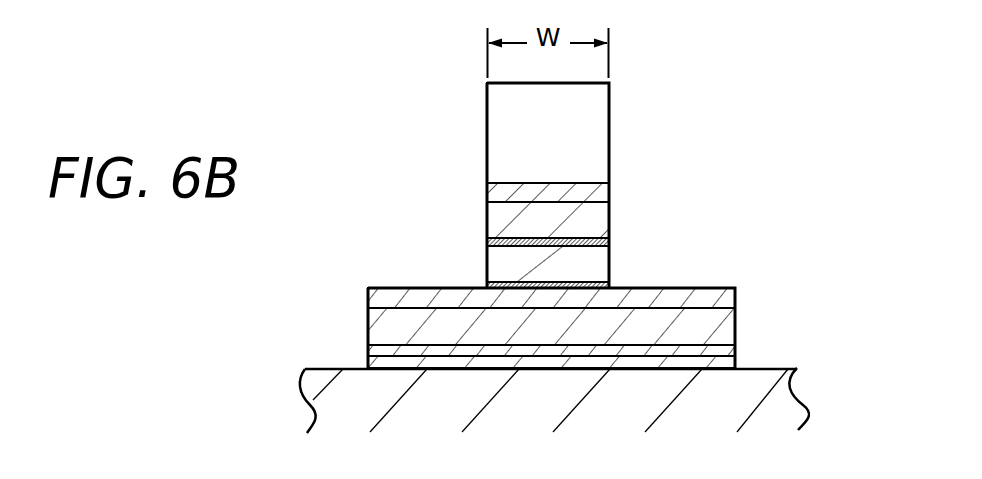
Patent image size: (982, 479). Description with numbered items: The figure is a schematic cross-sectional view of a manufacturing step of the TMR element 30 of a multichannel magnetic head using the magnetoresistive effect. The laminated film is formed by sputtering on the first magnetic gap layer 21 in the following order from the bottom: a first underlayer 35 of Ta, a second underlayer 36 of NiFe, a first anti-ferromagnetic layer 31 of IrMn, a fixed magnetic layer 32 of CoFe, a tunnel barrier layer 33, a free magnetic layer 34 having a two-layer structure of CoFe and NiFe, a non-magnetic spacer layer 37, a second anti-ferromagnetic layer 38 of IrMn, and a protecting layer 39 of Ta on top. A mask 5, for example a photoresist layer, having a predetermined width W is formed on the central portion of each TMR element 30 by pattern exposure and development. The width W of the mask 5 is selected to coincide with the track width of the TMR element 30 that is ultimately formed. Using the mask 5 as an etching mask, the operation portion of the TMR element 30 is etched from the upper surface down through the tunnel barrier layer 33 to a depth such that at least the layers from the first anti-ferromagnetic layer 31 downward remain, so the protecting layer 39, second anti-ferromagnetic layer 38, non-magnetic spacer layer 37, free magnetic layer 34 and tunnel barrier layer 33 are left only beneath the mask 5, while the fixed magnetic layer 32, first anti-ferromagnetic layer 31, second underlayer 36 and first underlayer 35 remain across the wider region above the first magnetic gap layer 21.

The mask 5 is at (592, 108).
The first magnetic gap layer 21 is at (785, 398).
The TMR element 30 is at (396, 178).
The first anti-ferromagnetic layer 31 is at (723, 318).
The fixed magnetic layer 32 is at (727, 297).
The tunnel barrier layer 33 is at (602, 282).
The free magnetic layer 34 is at (593, 262).
The first underlayer 35 is at (723, 362).
The second underlayer 36 is at (723, 347).
The non-magnetic spacer layer 37 is at (600, 242).
The second anti-ferromagnetic layer 38 is at (593, 222).
The protecting layer 39 is at (600, 195).